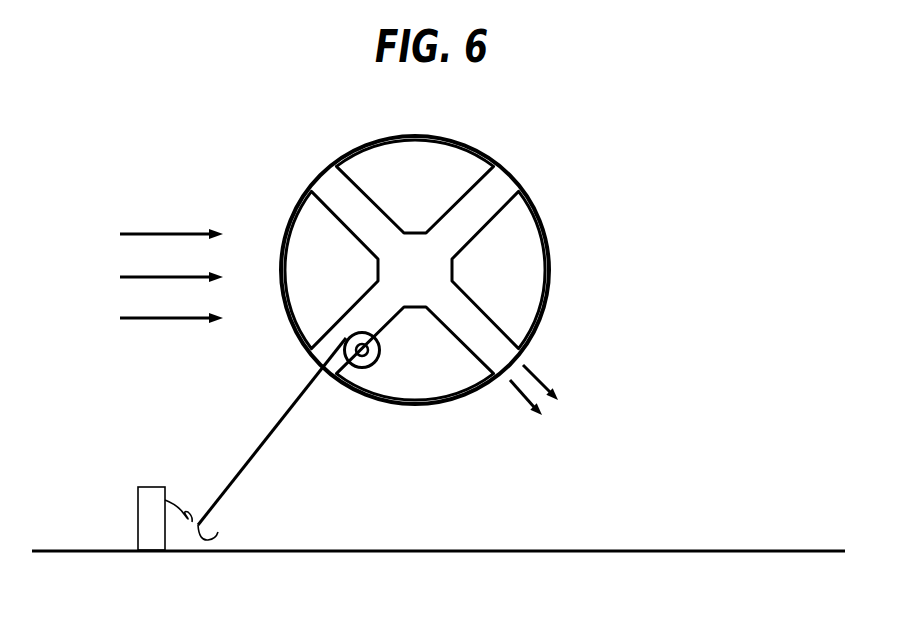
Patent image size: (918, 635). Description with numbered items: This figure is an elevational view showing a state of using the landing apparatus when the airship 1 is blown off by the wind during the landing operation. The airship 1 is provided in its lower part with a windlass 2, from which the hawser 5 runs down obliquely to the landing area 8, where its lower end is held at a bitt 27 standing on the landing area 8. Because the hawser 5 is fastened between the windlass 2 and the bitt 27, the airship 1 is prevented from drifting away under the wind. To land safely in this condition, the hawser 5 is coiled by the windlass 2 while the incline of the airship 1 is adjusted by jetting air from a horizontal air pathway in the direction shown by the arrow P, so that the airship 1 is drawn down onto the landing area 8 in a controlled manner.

The airship 1 is at (515, 225).
The windlass 2 is at (368, 367).
The hawser 5 is at (272, 435).
The landing area 8 is at (582, 552).
The bitt 27 is at (138, 512).
The arrow indicating air jetting direction P is at (542, 370).